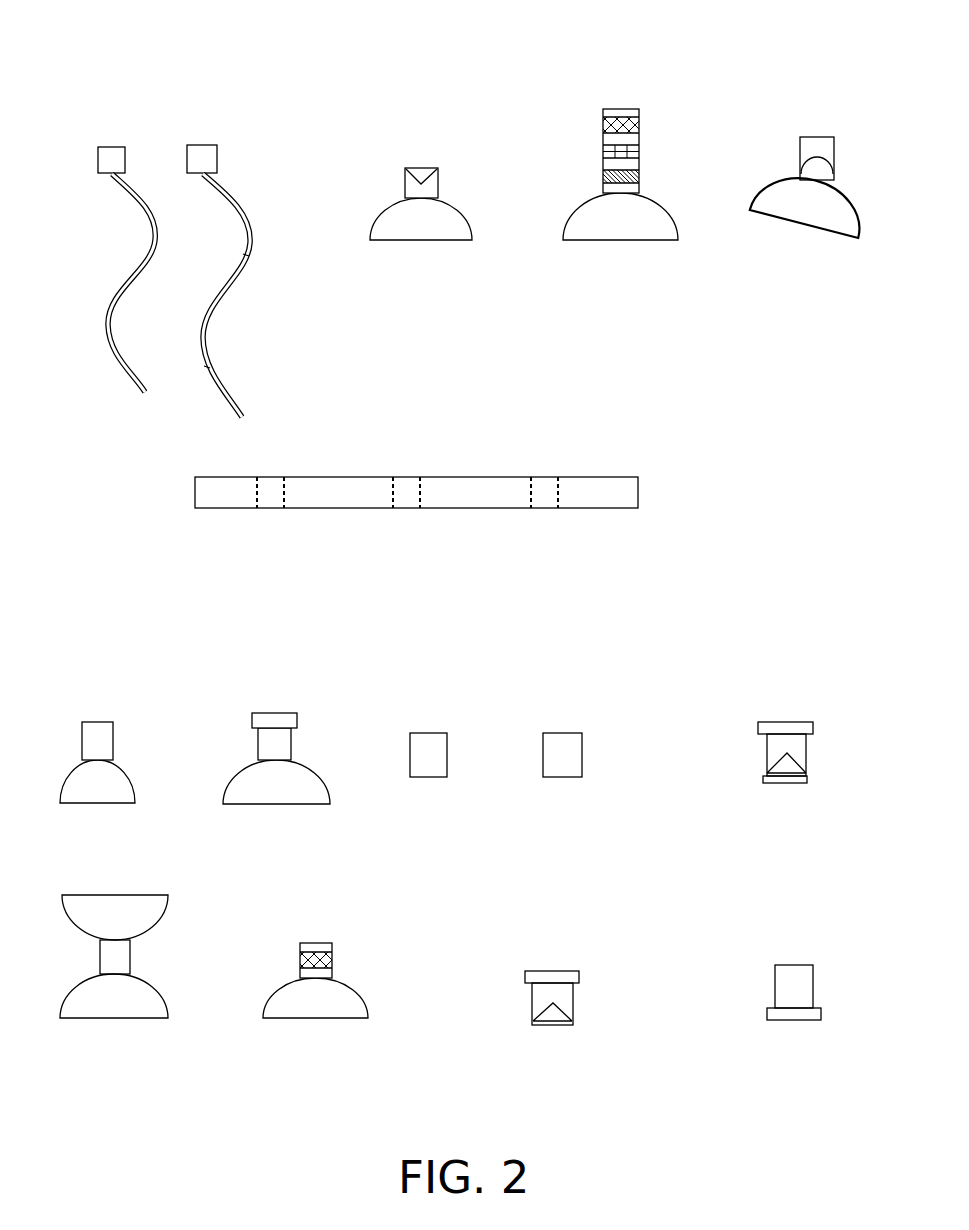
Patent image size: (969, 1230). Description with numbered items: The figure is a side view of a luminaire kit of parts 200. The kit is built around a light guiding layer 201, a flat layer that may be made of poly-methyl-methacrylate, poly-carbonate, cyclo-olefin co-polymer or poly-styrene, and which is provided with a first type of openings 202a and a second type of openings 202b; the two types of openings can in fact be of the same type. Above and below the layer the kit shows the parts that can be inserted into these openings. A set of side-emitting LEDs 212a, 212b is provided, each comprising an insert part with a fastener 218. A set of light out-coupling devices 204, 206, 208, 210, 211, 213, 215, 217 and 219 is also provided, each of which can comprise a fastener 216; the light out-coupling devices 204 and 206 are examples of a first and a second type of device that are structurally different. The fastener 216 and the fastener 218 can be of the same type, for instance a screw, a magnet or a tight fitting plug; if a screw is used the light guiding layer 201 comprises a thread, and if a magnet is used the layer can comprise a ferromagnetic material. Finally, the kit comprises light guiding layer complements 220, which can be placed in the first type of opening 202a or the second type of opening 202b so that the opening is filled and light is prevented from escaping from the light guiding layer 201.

The luminaire kit of parts 200 is at (207, 76).
The light guiding layer 201 is at (418, 537).
The first type of openings 202a is at (546, 509).
The second type of openings 202b is at (268, 509).
The light out-coupling device 204 is at (421, 177).
The light out-coupling device 206 is at (333, 958).
The light out-coupling device 208 is at (639, 172).
The light out-coupling device 210 is at (130, 777).
The light out-coupling device 211 is at (210, 323).
The side-emitting LED 212a is at (767, 755).
The side-emitting LED 212b is at (520, 1015).
The light out-coupling device 213 is at (143, 1020).
The light out-coupling device 215 is at (800, 142).
The fastener 216 is at (405, 178).
The light out-coupling device 217 is at (293, 747).
The fastener 218 is at (549, 1024).
The light out-coupling device 219 is at (775, 978).
The light guiding layer complement 220 is at (439, 733).